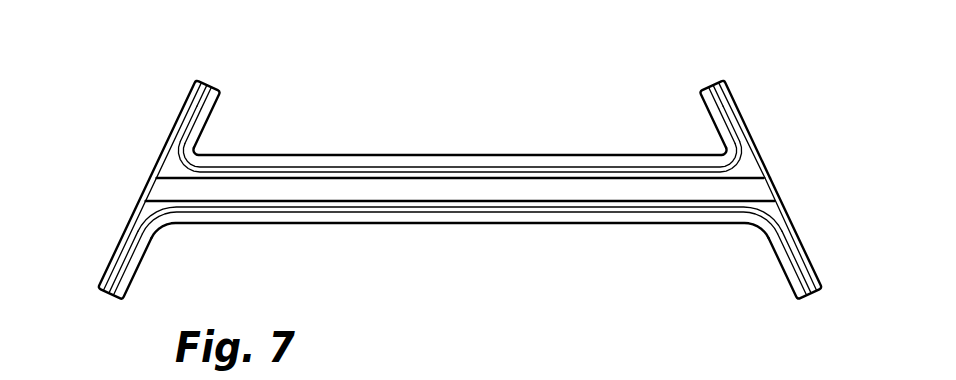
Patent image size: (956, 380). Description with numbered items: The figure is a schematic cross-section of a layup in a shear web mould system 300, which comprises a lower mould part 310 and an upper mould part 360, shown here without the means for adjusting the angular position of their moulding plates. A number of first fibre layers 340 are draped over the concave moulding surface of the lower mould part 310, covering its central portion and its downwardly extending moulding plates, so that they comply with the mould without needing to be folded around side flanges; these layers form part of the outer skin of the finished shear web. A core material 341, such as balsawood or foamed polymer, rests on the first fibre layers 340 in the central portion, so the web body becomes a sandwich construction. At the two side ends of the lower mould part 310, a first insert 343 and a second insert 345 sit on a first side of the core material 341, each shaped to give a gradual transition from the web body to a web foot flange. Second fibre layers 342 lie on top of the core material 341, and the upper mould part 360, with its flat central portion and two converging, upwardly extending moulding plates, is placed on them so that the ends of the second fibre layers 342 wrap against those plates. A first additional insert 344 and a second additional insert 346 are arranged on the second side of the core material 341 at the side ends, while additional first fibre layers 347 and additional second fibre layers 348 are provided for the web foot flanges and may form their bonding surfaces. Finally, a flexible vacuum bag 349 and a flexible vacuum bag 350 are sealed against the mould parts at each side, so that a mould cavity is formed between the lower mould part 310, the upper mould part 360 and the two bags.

The shear web mould system 300 is at (606, 126).
The lower mould part 310 is at (428, 225).
The first fibre layers 340 is at (624, 203).
The core material 341 is at (287, 191).
The second fibre layers 342 is at (427, 177).
The first insert 343 is at (149, 212).
The first additional insert 344 is at (168, 168).
The second insert 345 is at (782, 210).
The second additional insert 346 is at (761, 160).
The additional first fibre layers 347 is at (170, 141).
The additional second fibre layers 348 is at (778, 193).
The flexible vacuum bag 349 is at (229, 86).
The flexible vacuum bag 350 is at (700, 86).
The upper mould part 360 is at (541, 154).